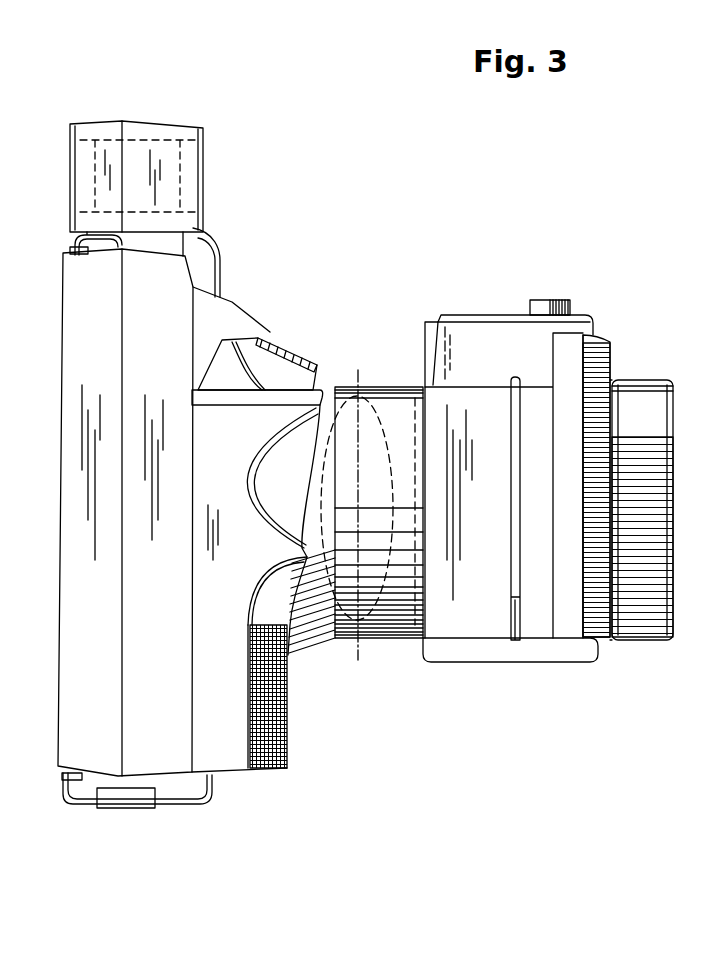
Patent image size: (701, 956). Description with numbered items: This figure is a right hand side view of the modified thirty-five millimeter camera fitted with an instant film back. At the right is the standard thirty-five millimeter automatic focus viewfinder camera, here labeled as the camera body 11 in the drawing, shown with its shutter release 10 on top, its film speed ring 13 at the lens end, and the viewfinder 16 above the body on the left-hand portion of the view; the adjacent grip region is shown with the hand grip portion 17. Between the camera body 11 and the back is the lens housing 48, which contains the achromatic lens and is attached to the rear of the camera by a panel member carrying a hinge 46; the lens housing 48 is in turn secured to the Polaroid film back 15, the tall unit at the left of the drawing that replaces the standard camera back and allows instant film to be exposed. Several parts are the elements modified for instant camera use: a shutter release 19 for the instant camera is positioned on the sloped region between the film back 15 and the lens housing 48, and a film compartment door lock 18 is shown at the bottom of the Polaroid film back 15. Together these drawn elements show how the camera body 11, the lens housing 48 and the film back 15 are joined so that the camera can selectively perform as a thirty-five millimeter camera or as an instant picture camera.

The shutter release 10 is at (555, 300).
The camera body 11 is at (435, 630).
The film speed ring 13 is at (633, 379).
The Polaroid film back 15 is at (58, 615).
The viewfinder 16 is at (150, 123).
The hand grip portion 17 is at (287, 740).
The film compartment door lock 18 is at (138, 810).
The shutter release for an instant camera 19 is at (308, 372).
The hinge 46 is at (508, 643).
The lens housing 48 is at (348, 640).